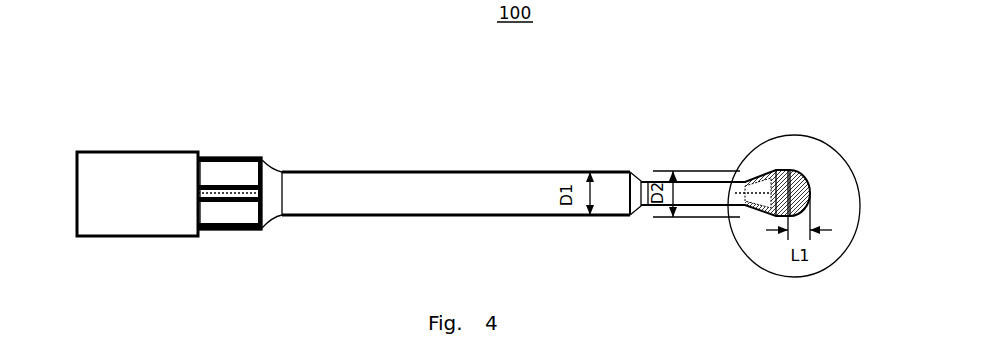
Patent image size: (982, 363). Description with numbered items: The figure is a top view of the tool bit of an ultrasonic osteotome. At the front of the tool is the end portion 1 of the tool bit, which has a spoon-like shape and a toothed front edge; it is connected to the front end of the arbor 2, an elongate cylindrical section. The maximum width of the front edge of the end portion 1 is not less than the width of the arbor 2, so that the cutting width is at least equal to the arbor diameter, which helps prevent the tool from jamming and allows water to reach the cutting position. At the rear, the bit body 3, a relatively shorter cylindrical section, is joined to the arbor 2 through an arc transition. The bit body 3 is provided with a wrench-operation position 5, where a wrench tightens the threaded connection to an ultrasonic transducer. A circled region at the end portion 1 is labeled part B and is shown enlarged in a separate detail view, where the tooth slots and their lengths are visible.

The end portion of the tool bit 1 is at (700, 198).
The arbor 2 is at (410, 198).
The bit body 3 is at (145, 173).
The wrench-operation position 5 is at (235, 173).
The part B is at (803, 135).